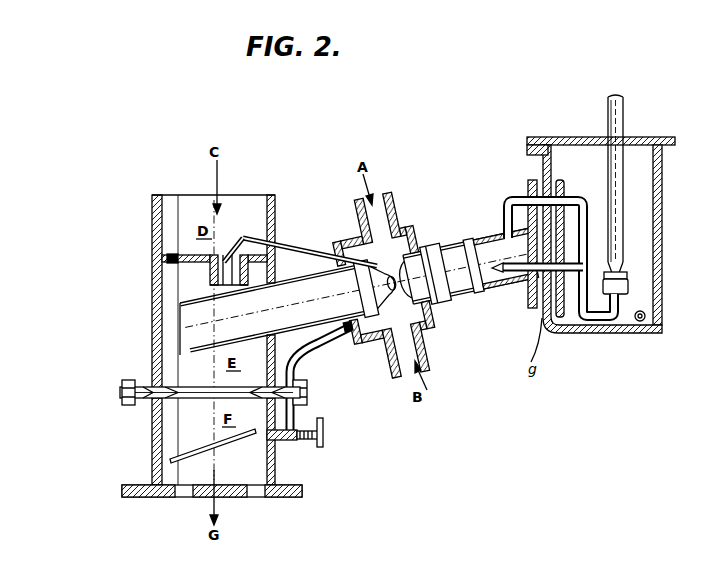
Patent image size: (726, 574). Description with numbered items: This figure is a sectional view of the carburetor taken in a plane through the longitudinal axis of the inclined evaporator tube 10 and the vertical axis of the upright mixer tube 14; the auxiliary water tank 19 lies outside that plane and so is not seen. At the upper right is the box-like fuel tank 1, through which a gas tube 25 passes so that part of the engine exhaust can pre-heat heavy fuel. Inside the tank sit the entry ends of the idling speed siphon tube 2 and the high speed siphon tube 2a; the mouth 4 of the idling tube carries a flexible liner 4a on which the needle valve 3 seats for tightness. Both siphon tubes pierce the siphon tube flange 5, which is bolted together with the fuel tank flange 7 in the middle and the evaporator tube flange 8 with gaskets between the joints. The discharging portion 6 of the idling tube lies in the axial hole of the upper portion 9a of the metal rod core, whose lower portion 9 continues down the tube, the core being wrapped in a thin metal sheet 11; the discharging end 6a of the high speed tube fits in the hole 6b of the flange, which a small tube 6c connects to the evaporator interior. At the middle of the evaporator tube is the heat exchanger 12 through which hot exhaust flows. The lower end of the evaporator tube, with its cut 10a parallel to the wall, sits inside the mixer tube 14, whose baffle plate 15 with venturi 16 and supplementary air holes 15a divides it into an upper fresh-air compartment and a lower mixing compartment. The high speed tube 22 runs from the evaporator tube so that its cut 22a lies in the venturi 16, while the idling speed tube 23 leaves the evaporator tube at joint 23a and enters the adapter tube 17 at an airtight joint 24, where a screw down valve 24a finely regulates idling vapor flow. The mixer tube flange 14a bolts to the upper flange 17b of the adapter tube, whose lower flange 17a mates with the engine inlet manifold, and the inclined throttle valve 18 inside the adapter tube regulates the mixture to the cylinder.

The fuel tank 1 is at (662, 180).
The idling speed siphon tube 2 is at (584, 270).
The high speed siphon tube 2a is at (585, 220).
The needle valve 3 is at (624, 120).
The mouth 4 is at (628, 288).
The liner 4a is at (628, 276).
The siphon tube flange 5 is at (561, 316).
The discharging portion of idling speed siphon tube 6 is at (488, 294).
The discharging end of high speed siphon tube 6a is at (549, 204).
The hole 6b is at (525, 192).
The small tube 6c is at (499, 205).
The fuel tank flange 7 is at (544, 160).
The evaporator tube flange 8 is at (532, 182).
The lower portion of metal rod core 9 is at (453, 262).
The upper portion of metal rod core 9a is at (482, 255).
The evaporator tube 10 is at (445, 312).
The cut 10a is at (180, 350).
The thin metal sheet 11 is at (399, 300).
The heat exchanger 12 is at (351, 232).
The mixer tube 14 is at (152, 325).
The flange of mixer tube 14a is at (122, 390).
The baffle plate 15 is at (213, 256).
The supplementary air holes 15a is at (166, 252).
The venturi 16 is at (232, 286).
The adapter tube 17 is at (152, 440).
The lower flange of adapter tube 17a is at (122, 492).
The upper flange of adapter tube 17b is at (124, 400).
The throttle valve 18 is at (226, 444).
The auxiliary water tank 19 is at (308, 348).
The high speed tube 22 is at (338, 252).
The cut 22a is at (226, 258).
The idling speed tube 23 is at (336, 352).
The joint 23a is at (344, 334).
The airtight joint 24 is at (298, 428).
The screw down valve 24a is at (322, 447).
The gas tube 25 is at (647, 316).